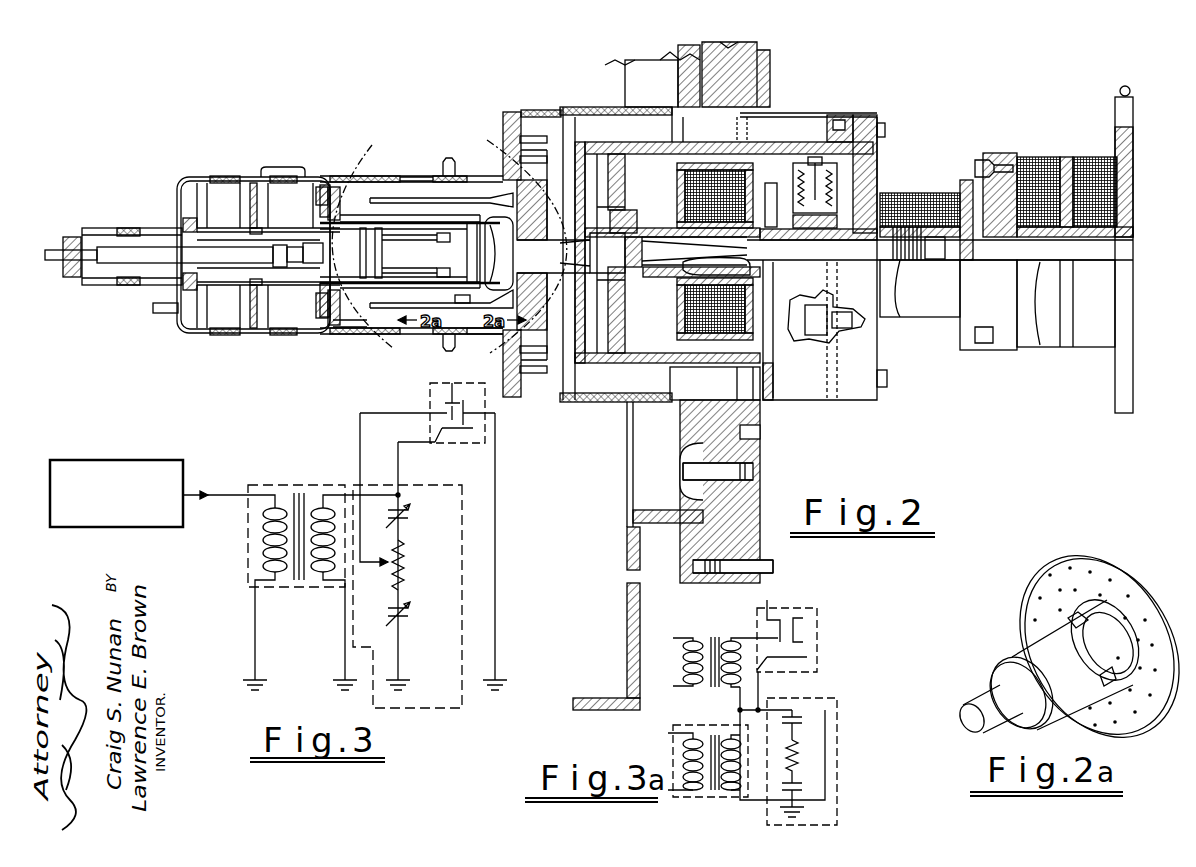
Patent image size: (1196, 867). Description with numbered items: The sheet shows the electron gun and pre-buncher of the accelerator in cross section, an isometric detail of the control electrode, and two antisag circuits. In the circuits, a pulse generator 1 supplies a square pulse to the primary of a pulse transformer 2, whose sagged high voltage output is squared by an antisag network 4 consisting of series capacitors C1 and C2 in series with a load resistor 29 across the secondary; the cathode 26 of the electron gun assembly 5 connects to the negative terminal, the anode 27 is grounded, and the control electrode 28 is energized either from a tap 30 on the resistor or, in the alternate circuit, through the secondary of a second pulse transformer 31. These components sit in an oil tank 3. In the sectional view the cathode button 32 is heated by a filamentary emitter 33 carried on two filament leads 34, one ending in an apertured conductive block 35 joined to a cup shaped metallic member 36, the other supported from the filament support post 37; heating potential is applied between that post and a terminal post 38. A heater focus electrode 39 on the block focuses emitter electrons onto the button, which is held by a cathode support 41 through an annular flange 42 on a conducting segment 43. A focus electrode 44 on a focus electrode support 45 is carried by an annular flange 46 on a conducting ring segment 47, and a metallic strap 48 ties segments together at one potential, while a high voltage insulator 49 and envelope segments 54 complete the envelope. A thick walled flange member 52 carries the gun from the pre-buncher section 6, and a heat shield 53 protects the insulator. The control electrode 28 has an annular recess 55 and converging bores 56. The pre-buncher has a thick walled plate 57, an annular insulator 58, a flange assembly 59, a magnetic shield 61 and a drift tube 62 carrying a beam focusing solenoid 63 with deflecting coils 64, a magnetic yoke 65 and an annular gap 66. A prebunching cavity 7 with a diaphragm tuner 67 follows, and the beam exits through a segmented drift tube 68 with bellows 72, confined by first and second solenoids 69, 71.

In FIG. 3, the pulse generator 1 is at (122, 460).
In FIG. 3, the pulse transformer 2 is at (296, 485).
In FIG. 3A, the pulse transformer 2 is at (718, 800).
In FIG. 2, the oil tank 3 is at (642, 578).
In FIG. 3, the antisag network 4 is at (414, 712).
In FIG. 3A, the antisag network 4 is at (838, 723).
In FIG. 2, the electron gun assembly 5 is at (415, 160).
In FIG. 3, the electron gun assembly 5 is at (464, 450).
In FIG. 3A, the electron gun assembly 5 is at (802, 603).
In FIG. 2, the pre-buncher section 6 is at (598, 404).
In FIG. 2, the prebunching cavity 7 is at (877, 176).
In FIG. 3, the cathode 26 is at (442, 436).
In FIG. 3A, the cathode 26 is at (783, 660).
In FIG. 2, the anode 27 is at (612, 363).
In FIG. 3, the anode 27 is at (452, 363).
In FIG. 3A, the anode 27 is at (767, 600).
In FIG. 2, the control electrode 28 is at (573, 225).
In FIG. 3, the control electrode 28 is at (446, 412).
In FIG. 3A, the control electrode 28 is at (805, 648).
In FIG. 2A, the control electrode 28 is at (1110, 590).
In FIG. 3, the load resistor 29 is at (410, 568).
In FIG. 3A, the load resistor 29 is at (800, 752).
In FIG. 3, the tap 30 is at (362, 562).
In FIG. 3A, the second pulse transformer 31 is at (713, 635).
In FIG. 2, the cathode button 32 is at (485, 335).
In FIG. 2, the filamentary emitter 33 is at (462, 303).
In FIG. 2, the filament leads 34 is at (395, 198).
In FIG. 2, the apertured conductive block 35 is at (180, 200).
In FIG. 2, the cup shaped metallic member 36 is at (186, 333).
In FIG. 2, the filament support post 37 is at (163, 247).
In FIG. 2, the terminal post 38 is at (168, 313).
In FIG. 2, the heater focus electrode 39 is at (222, 228).
In FIG. 2, the cathode support 41 is at (283, 243).
In FIG. 2, the annular flange 42 is at (250, 300).
In FIG. 2, the annular metallic conducting segment 43 is at (254, 183).
In FIG. 2, the focus electrode 44 is at (472, 217).
In FIG. 2, the focus electrode support 45 is at (355, 215).
In FIG. 2A, the focus electrode support 45 is at (998, 690).
In FIG. 2, the annular flange 46 is at (330, 195).
In FIG. 2, the annular conducting ring segment 47 is at (322, 187).
In FIG. 2, the metallic strap 48 is at (300, 168).
In FIG. 2, the high voltage insulator 49 is at (352, 335).
In FIG. 2, the annular thick walled flange member 52 is at (508, 112).
In FIG. 2, the heat shield 53 is at (437, 198).
In FIG. 2A, the heat shield 53 is at (1015, 647).
In FIG. 2, the cathode envelope segments 54 is at (447, 350).
In FIG. 2, the annular recess 55 is at (540, 198).
In FIG. 2A, the annular recess 55 is at (1065, 600).
In FIG. 2, the converging bores 56 is at (556, 302).
In FIG. 2A, the converging bores 56 is at (1120, 622).
In FIG. 2, the thick walled plate 57 is at (880, 141).
In FIG. 2, the annular electrical insulator 58 is at (650, 402).
In FIG. 2, the flange assembly 59 is at (772, 80).
In FIG. 2, the magnetic shield 61 is at (787, 142).
In FIG. 2, the drift tube 62 is at (650, 228).
In FIG. 2, the beam focusing solenoid 63 is at (700, 350).
In FIG. 2, the beam deflecting coils 64 is at (682, 270).
In FIG. 2, the magnetic yoke 65 is at (680, 320).
In FIG. 2, the annular gap 66 is at (680, 200).
In FIG. 2, the diaphragm tuner 67 is at (840, 175).
In FIG. 2, the segmented drift tube 68 is at (1120, 245).
In FIG. 2, the first beam confining solenoid 69 is at (925, 193).
In FIG. 2, the second beam confining solenoid 71 is at (1038, 157).
In FIG. 2, the bellows 72 is at (925, 247).
In FIG. 3, the capacitor C1 is at (416, 516).
In FIG. 3A, the capacitor C1 is at (810, 728).
In FIG. 3, the capacitor C2 is at (416, 614).
In FIG. 3A, the capacitor C2 is at (812, 790).